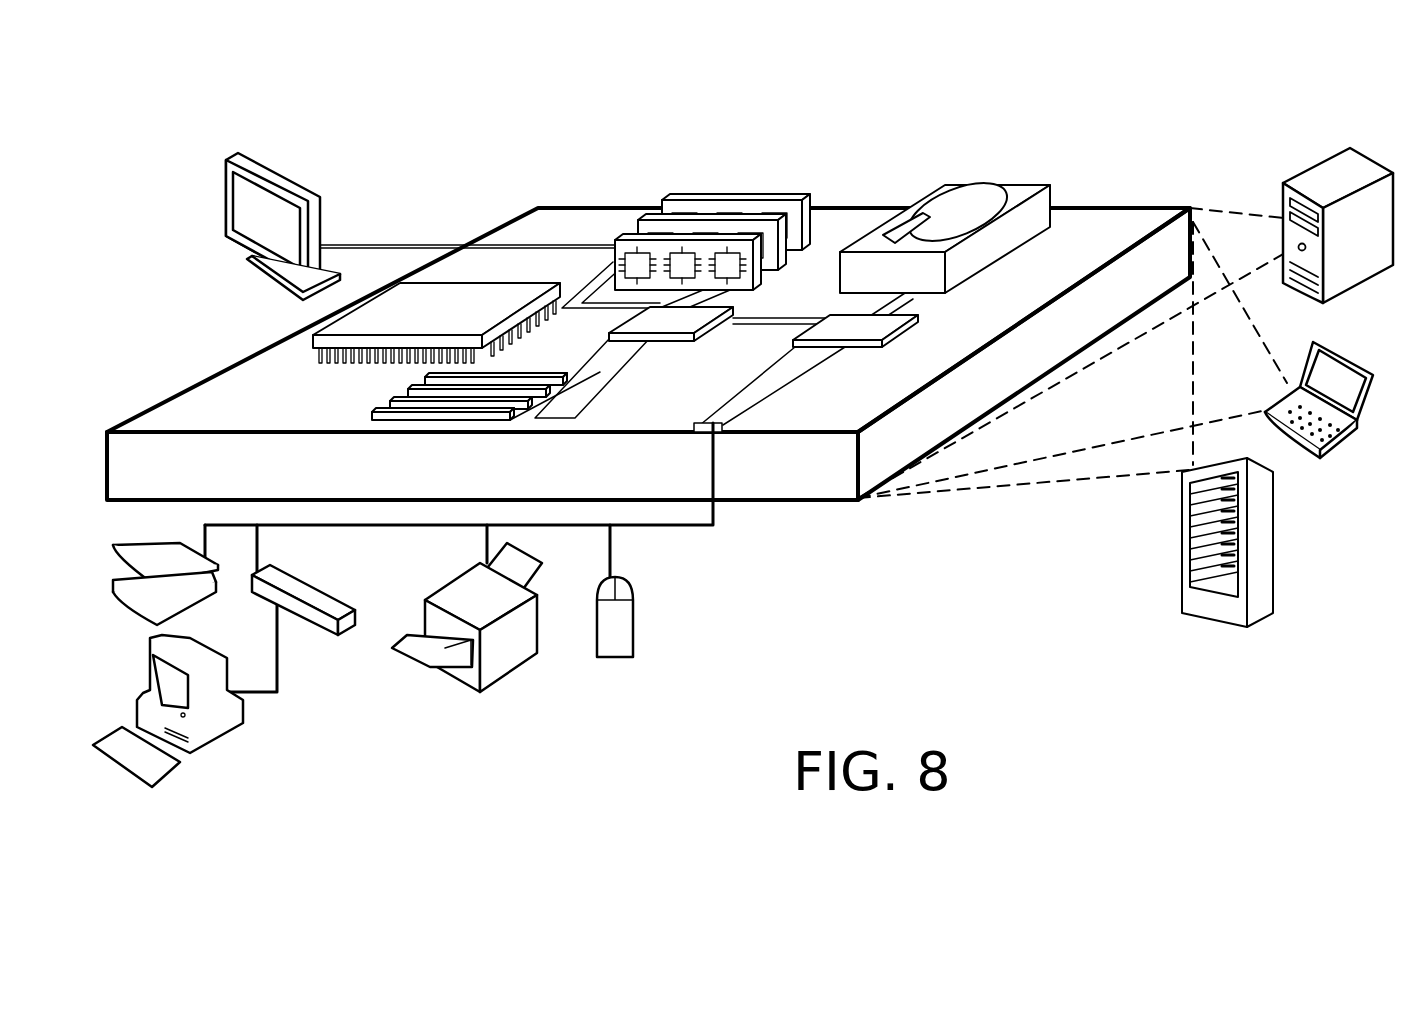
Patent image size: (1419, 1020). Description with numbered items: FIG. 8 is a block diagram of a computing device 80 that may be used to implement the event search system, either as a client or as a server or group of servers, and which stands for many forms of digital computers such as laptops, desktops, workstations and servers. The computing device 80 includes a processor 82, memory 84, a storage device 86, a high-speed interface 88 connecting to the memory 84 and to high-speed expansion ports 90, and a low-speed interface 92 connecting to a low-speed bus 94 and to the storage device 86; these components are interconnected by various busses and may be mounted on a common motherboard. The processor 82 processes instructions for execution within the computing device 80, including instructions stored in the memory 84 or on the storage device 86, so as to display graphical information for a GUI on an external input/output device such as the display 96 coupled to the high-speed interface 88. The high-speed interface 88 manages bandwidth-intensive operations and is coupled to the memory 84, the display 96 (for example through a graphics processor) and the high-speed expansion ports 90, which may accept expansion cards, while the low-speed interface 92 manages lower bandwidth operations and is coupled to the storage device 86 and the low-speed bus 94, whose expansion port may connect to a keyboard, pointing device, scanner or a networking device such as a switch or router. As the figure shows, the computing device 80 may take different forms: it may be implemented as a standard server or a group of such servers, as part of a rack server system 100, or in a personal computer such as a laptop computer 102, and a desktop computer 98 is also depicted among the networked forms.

The computing device 80 is at (398, 183).
The processor 82 is at (305, 346).
The memory 84 is at (700, 200).
The storage device 86 is at (940, 188).
The high-speed interface 88 is at (649, 320).
The high-speed expansion ports 90 is at (372, 416).
The low-speed interface 92 is at (833, 325).
The low-speed bus 94 is at (722, 427).
The display 96 is at (225, 173).
The desktop computer 98 is at (1302, 172).
The rack server system 100 is at (1180, 530).
The laptop computer 102 is at (1335, 443).